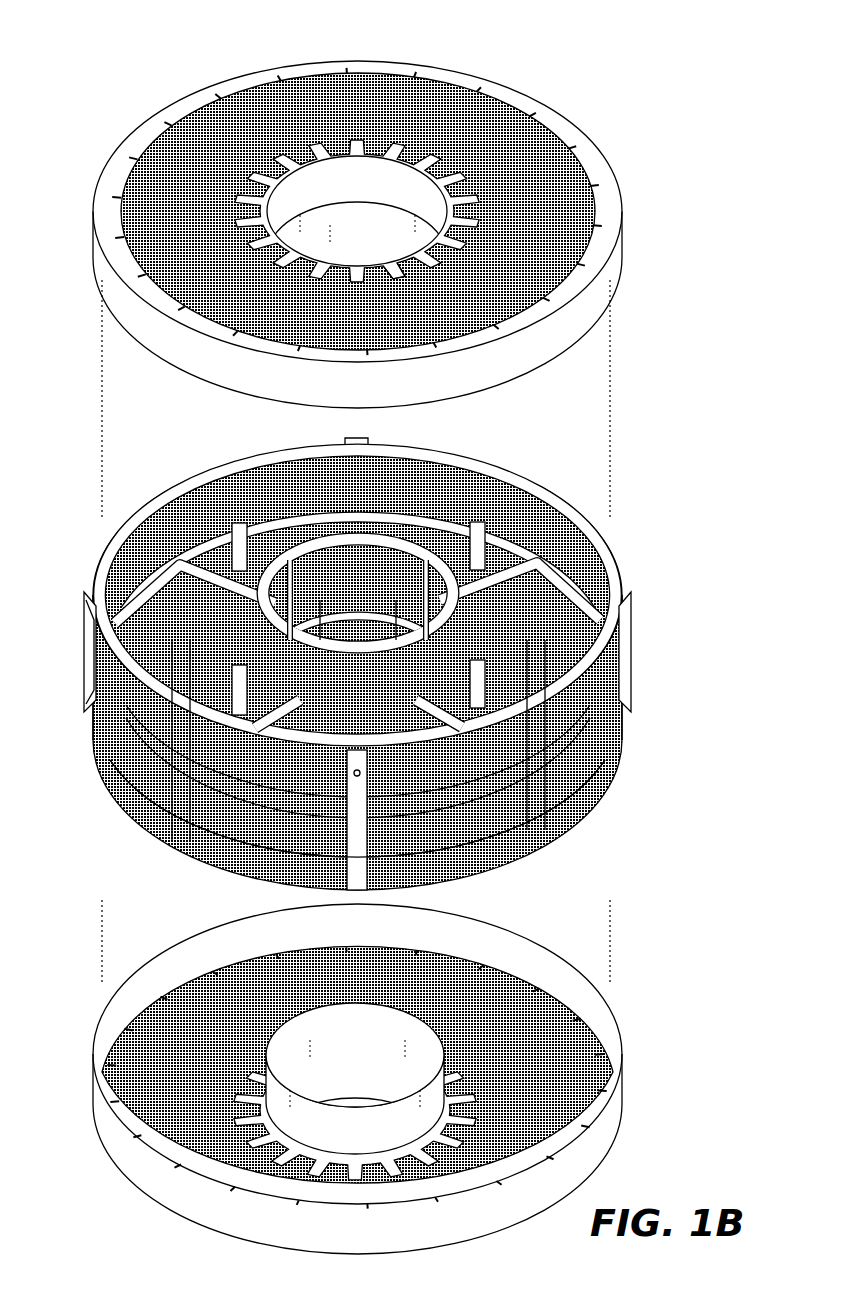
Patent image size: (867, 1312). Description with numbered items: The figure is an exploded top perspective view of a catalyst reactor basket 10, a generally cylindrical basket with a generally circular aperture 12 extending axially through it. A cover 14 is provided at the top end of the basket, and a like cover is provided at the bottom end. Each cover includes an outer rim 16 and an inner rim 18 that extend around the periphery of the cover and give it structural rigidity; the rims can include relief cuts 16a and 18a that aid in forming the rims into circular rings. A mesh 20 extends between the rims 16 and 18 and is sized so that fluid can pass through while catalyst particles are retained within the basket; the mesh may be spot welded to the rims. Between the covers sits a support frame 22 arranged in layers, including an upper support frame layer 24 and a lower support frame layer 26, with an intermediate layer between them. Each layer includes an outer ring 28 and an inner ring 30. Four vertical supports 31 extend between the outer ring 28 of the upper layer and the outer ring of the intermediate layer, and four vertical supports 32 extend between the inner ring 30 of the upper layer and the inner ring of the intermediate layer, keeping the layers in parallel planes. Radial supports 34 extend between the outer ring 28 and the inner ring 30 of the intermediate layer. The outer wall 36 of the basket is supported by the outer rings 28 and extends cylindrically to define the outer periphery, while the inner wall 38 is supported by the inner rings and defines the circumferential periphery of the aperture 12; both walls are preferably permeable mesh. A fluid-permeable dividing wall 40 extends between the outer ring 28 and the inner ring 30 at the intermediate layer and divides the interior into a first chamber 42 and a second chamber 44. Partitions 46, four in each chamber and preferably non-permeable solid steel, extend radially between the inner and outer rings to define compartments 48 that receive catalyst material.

The catalyst reactor basket 10 is at (150, 70).
The circular aperture 12 is at (405, 178).
The cover 14 is at (340, 212).
The outer rim 16 is at (292, 62).
The relief cut 16a is at (553, 128).
The inner rim 18 is at (255, 190).
The relief cut 18a is at (387, 148).
The mesh 20 is at (172, 200).
The support frame 22 is at (352, 655).
The upper support frame layer 24 is at (232, 470).
The lower support frame layer 26 is at (525, 858).
The outer ring 28 is at (145, 520).
The inner ring 30 is at (463, 536).
The vertical supports 31 is at (445, 565).
The vertical supports 32 is at (368, 545).
The radial supports 34 is at (130, 570).
The outer wall 36 is at (112, 790).
The inner wall 38 is at (395, 540).
The dividing wall 40 is at (560, 580).
The first chamber 42 is at (300, 470).
The second chamber 44 is at (225, 872).
The partitions 46 is at (180, 510).
The compartments 48 is at (132, 547).